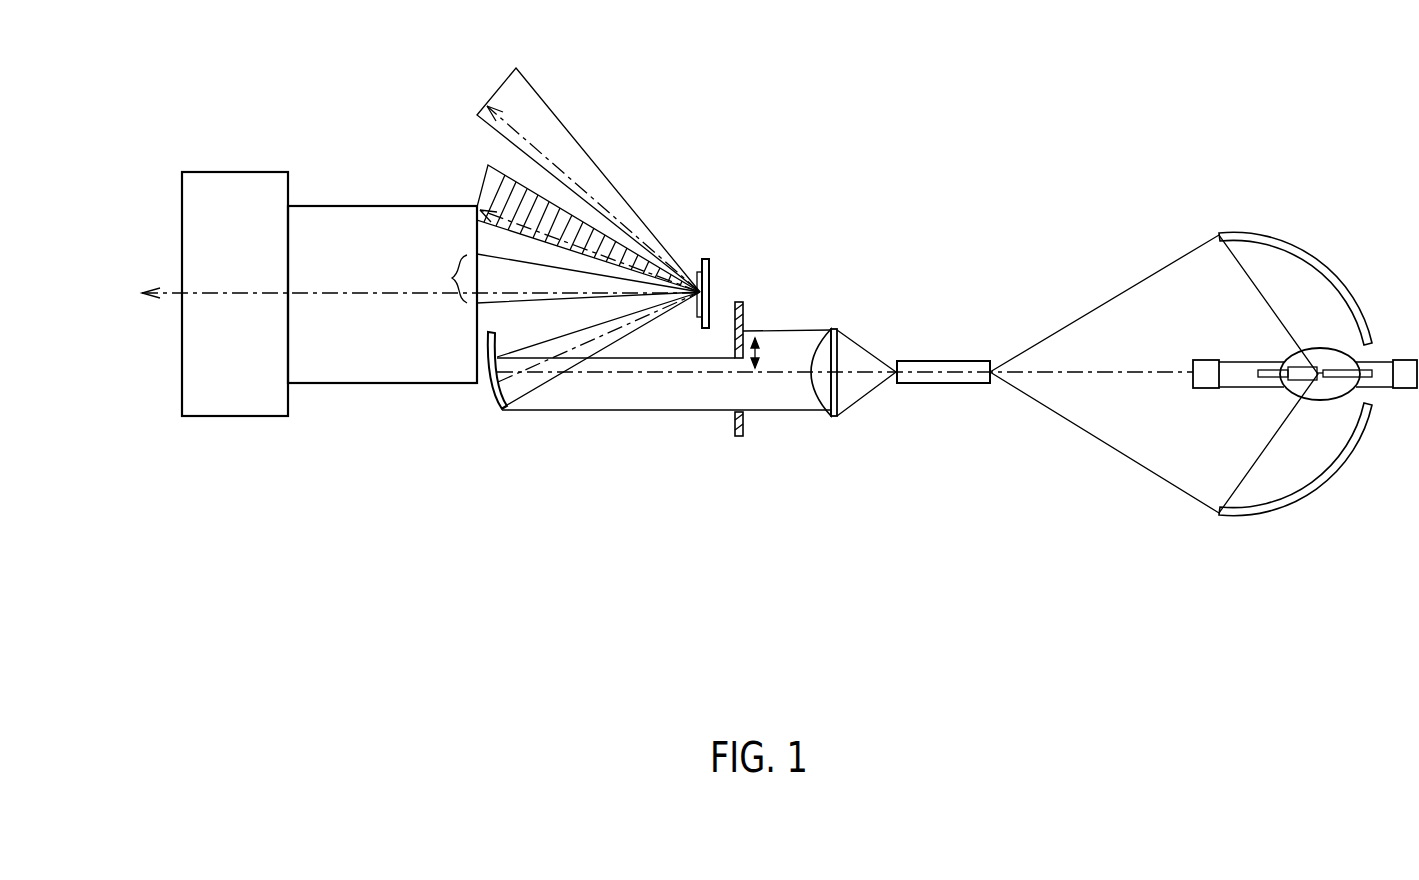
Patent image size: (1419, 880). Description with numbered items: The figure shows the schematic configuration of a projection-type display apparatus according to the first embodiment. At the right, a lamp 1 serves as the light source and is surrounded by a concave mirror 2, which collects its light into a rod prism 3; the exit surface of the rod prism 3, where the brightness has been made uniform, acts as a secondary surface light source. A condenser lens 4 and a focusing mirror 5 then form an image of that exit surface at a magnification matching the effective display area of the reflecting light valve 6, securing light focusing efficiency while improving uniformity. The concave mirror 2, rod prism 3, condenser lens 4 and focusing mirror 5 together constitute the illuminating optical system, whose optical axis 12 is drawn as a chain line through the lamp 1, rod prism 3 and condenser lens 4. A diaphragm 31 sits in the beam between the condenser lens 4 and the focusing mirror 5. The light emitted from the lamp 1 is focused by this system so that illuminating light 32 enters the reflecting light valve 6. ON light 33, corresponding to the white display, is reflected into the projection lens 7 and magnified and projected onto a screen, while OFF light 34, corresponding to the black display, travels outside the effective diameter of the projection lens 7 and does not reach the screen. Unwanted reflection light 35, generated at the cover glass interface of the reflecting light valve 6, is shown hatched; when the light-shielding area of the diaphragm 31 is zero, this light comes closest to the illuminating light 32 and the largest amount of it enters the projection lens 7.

The lamp 1 is at (1327, 355).
The concave mirror 2 is at (1310, 488).
The rod prism 3 is at (952, 383).
The condenser lens 4 is at (835, 410).
The focusing mirror 5 is at (496, 393).
The reflecting light valve 6 is at (709, 273).
The projection lens 7 is at (323, 362).
The optical axis 12 is at (1133, 374).
The diaphragm 31 is at (735, 436).
The illuminating light 32 is at (552, 380).
The ON light 33 is at (452, 278).
The OFF light 34 is at (512, 57).
The unwanted reflection light 35 is at (483, 172).